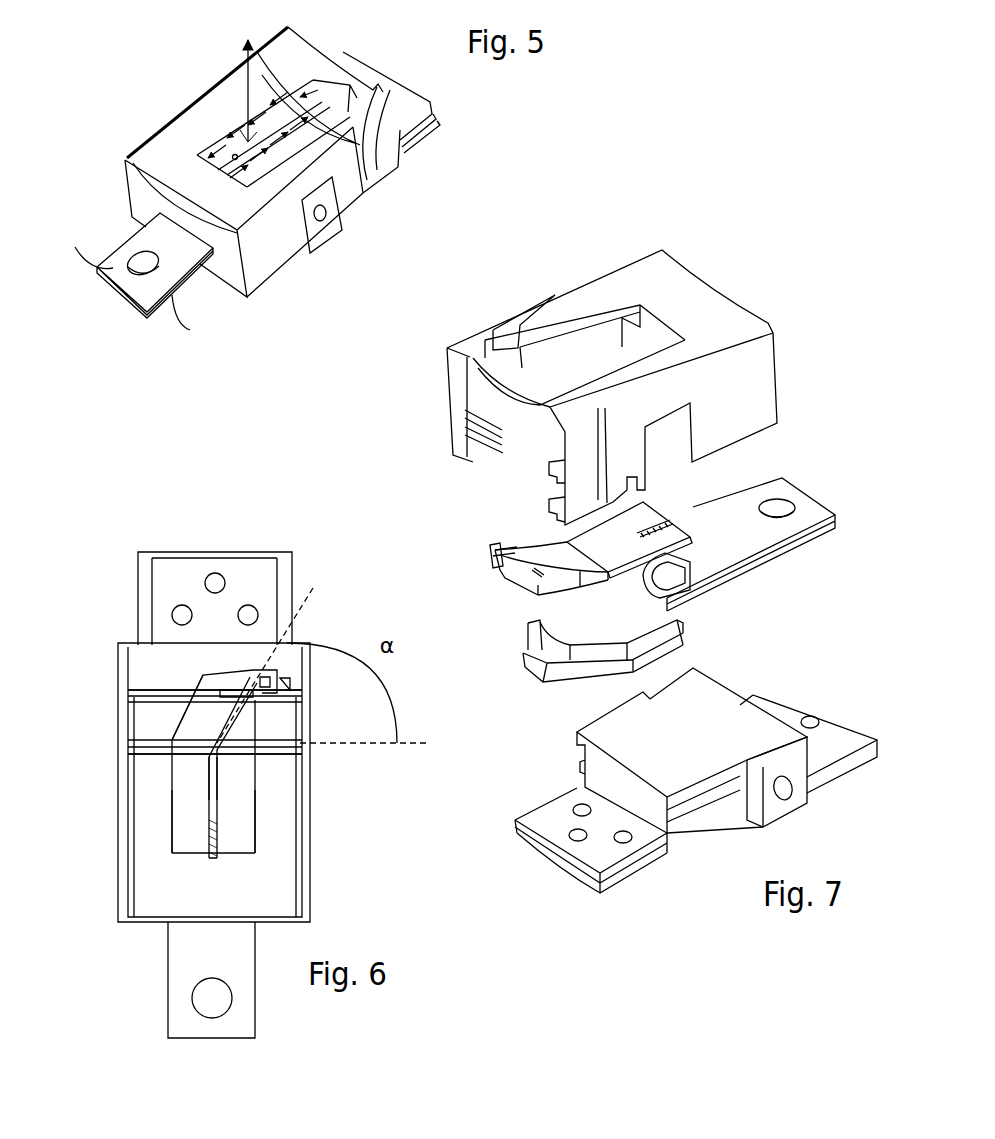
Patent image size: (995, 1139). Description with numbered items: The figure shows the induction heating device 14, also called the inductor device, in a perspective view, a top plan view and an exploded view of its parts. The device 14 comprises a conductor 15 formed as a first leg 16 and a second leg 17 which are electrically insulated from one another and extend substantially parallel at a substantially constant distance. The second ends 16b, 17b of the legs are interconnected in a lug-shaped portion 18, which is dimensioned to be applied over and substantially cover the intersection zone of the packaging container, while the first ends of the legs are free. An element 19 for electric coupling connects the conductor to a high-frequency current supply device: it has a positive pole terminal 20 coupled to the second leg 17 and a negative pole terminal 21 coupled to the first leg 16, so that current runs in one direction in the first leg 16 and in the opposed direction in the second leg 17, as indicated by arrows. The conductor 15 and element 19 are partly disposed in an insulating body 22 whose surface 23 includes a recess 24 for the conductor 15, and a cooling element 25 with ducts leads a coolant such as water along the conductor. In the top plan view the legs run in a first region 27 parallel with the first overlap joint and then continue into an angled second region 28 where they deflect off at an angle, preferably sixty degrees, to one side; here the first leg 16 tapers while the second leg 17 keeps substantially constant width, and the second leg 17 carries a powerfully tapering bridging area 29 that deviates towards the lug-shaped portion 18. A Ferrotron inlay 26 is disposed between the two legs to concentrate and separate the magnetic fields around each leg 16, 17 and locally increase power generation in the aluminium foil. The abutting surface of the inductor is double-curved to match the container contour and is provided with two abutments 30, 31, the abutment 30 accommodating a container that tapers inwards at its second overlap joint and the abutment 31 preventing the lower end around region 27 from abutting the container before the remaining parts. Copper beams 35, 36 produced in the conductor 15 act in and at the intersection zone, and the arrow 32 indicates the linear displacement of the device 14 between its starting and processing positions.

In FIG. 5, the induction heating device 14 is at (146, 120).
In FIG. 6, the conductor 15 is at (188, 858).
In FIG. 6, the first leg 16 is at (242, 827).
In FIG. 7, the first leg 16 is at (640, 523).
In FIG. 6, the second end of first leg 16b is at (253, 708).
In FIG. 6, the second leg 17 is at (178, 828).
In FIG. 7, the second leg 17 is at (572, 575).
In FIG. 6, the second end of second leg 17b is at (210, 705).
In FIG. 6, the lug-shaped portion 18 is at (287, 665).
In FIG. 7, the lug-shaped portion 18 is at (495, 548).
In FIG. 7, the element for electric coupling 19 is at (767, 518).
In FIG. 7, the positive pole terminal 20 is at (800, 540).
In FIG. 7, the negative pole terminal 21 is at (795, 482).
In FIG. 7, the insulating body 22 is at (612, 371).
In FIG. 7, the surface 23 is at (660, 275).
In FIG. 7, the recess 24 is at (565, 300).
In FIG. 7, the cooling element 25 is at (835, 705).
In FIG. 6, the Ferrotron inlay 26 is at (213, 785).
In FIG. 7, the Ferrotron inlay 26 is at (553, 690).
In FIG. 6, the first region 27 is at (106, 747).
In FIG. 6, the second region 28 is at (106, 683).
In FIG. 6, the bridging area 29 is at (232, 678).
In FIG. 5, the abutment 30 is at (343, 140).
In FIG. 5, the abutment 31 is at (362, 180).
In FIG. 5, the arrow 32 is at (245, 73).
In FIG. 7, the first beam 35 is at (540, 575).
In FIG. 7, the pair of beams 36 is at (495, 550).